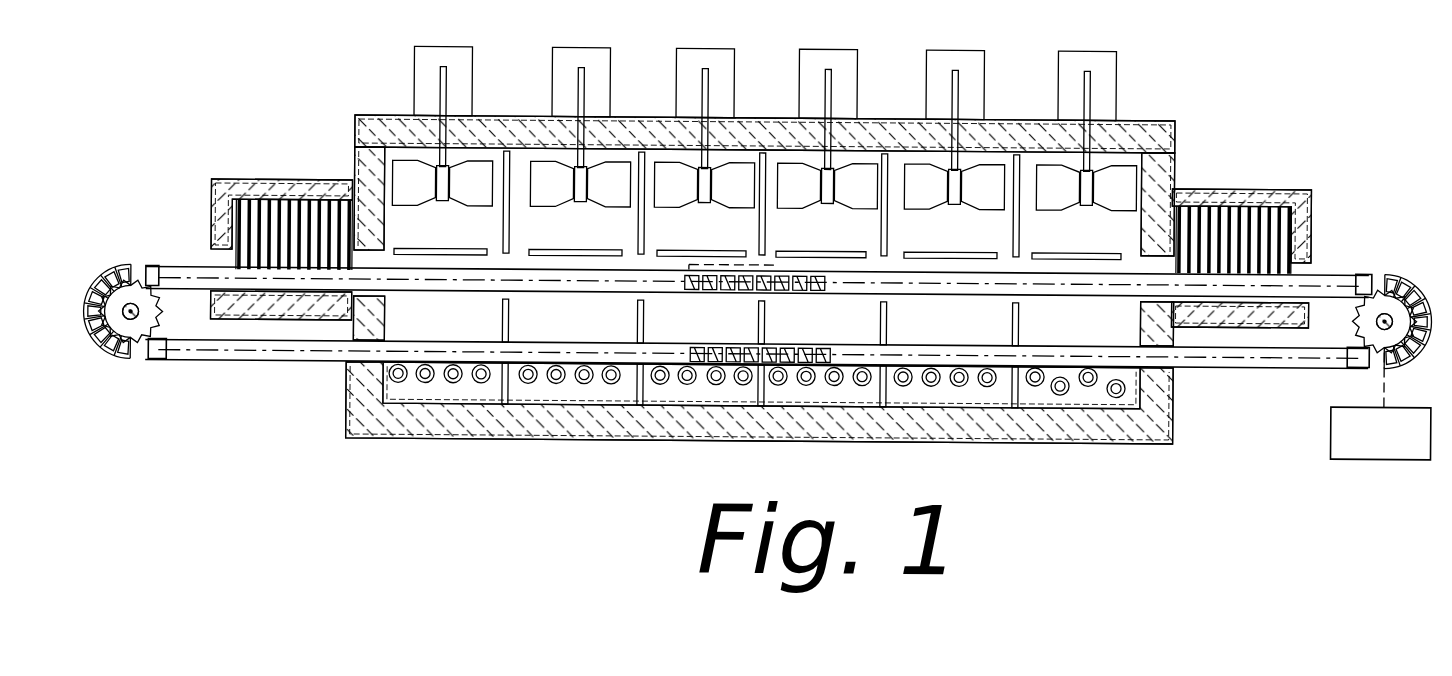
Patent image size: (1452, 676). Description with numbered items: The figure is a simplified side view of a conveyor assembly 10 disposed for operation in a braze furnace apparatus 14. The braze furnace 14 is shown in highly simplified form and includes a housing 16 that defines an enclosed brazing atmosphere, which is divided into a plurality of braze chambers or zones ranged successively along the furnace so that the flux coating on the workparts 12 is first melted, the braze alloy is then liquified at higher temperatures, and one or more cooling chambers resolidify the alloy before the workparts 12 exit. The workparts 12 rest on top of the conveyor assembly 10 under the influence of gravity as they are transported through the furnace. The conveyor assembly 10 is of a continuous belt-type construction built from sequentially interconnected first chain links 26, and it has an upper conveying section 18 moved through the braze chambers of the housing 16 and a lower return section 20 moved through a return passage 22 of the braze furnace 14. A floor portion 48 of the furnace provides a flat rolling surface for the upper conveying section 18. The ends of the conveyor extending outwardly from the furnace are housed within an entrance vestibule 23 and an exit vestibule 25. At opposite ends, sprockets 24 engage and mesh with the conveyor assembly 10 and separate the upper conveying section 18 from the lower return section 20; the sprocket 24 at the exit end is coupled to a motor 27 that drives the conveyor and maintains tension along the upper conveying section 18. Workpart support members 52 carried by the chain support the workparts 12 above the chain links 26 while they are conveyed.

The conveyor assembly 10 is at (146, 236).
The workparts 12 is at (795, 262).
The braze furnace apparatus 14 is at (1182, 114).
The housing 16 is at (752, 114).
The upper conveying section 18 is at (193, 265).
The lower return section 20 is at (255, 366).
The return passage 22 is at (345, 356).
The entrance vestibule 23 is at (270, 182).
The sprockets 24 is at (166, 330).
The exit vestibule 25 is at (1275, 183).
The first chain links 26 is at (141, 353).
The motor 27 is at (1368, 452).
The floor portion 48 is at (512, 300).
The first workpart support member 52 is at (121, 264).